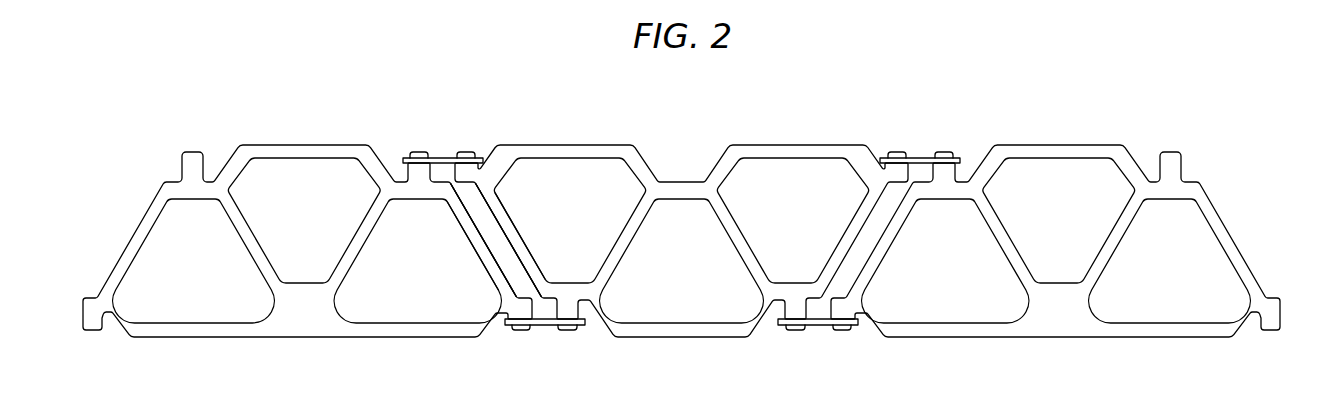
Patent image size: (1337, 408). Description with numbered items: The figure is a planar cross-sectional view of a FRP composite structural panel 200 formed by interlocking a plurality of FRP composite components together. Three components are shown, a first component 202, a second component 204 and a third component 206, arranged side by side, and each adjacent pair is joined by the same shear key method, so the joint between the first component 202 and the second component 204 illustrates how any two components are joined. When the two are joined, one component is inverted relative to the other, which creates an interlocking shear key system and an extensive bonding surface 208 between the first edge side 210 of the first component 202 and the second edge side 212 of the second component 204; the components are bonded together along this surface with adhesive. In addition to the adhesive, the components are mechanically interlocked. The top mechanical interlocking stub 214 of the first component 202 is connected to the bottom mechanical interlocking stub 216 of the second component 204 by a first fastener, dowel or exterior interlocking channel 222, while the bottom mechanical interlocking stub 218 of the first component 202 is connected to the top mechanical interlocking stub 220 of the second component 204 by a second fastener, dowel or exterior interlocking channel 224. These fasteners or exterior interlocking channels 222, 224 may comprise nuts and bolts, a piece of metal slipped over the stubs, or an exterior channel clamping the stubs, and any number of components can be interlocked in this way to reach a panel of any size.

The FRP composite structural panel 200 is at (1177, 91).
The first component 202 is at (307, 145).
The second component 204 is at (680, 182).
The third component 206 is at (1047, 145).
The bonding surface 208 is at (482, 220).
The first edge side 210 is at (470, 230).
The second edge side 212 is at (518, 255).
The top mechanical interlocking stub 214 is at (413, 153).
The bottom mechanical interlocking stub 216 is at (470, 153).
The bottom mechanical interlocking stub 218 is at (517, 331).
The top mechanical interlocking stub 220 is at (570, 331).
The exterior interlocking channel 222 is at (443, 158).
The exterior interlocking channel 224 is at (543, 326).